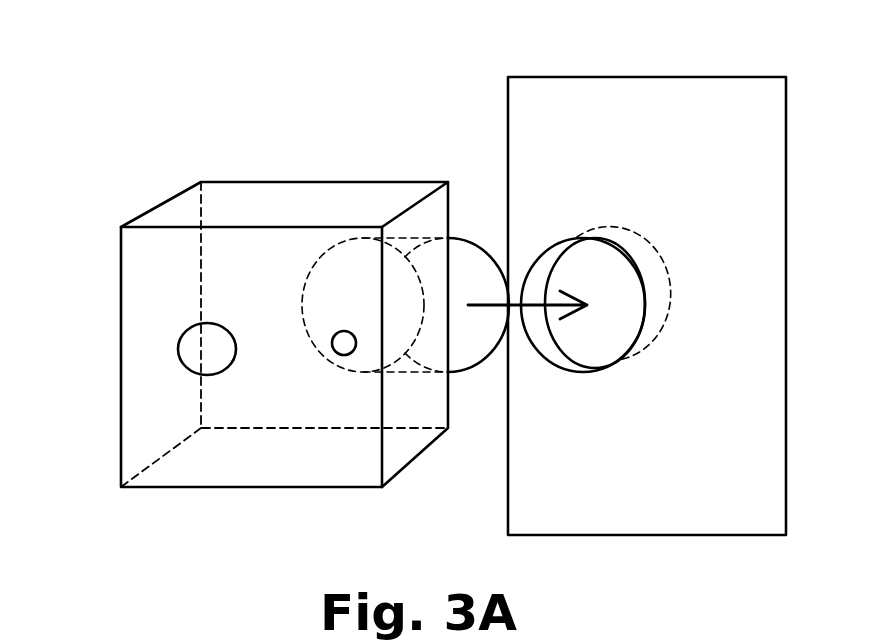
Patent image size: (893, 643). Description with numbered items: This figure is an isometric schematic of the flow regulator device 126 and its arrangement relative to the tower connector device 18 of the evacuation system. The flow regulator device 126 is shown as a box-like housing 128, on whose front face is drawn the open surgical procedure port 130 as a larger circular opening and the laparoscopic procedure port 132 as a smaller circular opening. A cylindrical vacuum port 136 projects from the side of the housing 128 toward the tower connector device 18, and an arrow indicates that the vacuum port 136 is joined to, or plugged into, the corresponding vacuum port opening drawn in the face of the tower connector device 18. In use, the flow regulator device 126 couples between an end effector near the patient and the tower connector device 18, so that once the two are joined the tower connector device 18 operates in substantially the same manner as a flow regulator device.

The tower connector device 18 is at (650, 77).
The flow regulator device 126 is at (333, 167).
The housing 128 is at (155, 209).
The open surgical procedure port 130 is at (178, 350).
The laparoscopic procedure port 132 is at (334, 352).
The vacuum port 136 is at (478, 244).